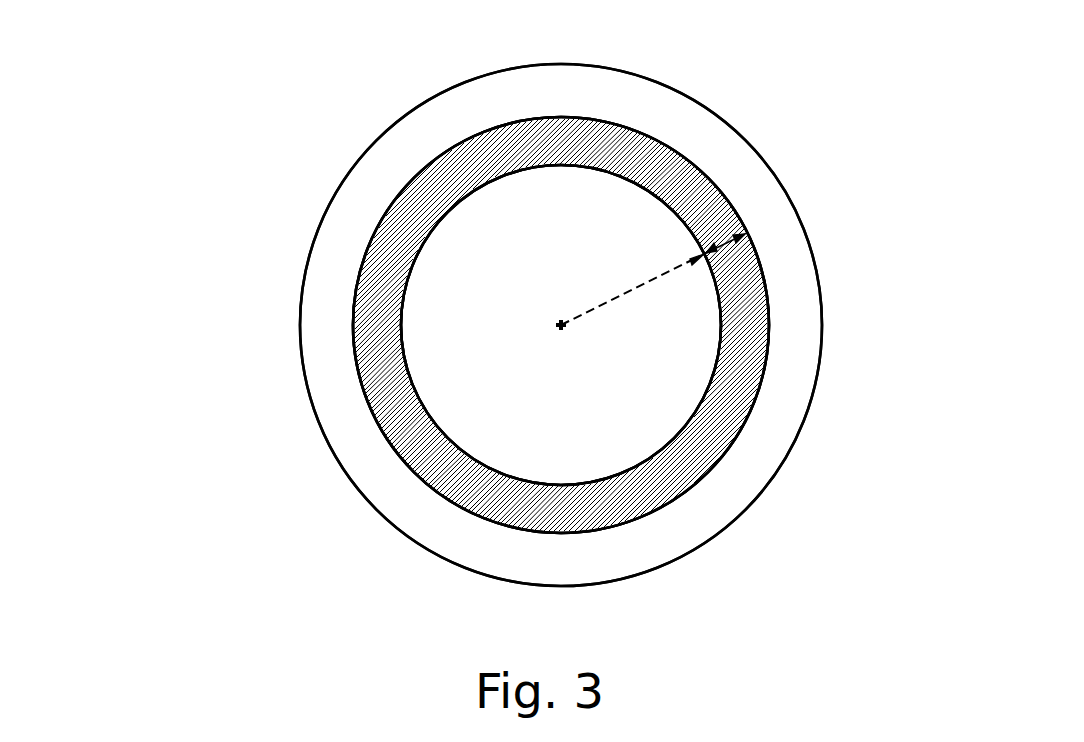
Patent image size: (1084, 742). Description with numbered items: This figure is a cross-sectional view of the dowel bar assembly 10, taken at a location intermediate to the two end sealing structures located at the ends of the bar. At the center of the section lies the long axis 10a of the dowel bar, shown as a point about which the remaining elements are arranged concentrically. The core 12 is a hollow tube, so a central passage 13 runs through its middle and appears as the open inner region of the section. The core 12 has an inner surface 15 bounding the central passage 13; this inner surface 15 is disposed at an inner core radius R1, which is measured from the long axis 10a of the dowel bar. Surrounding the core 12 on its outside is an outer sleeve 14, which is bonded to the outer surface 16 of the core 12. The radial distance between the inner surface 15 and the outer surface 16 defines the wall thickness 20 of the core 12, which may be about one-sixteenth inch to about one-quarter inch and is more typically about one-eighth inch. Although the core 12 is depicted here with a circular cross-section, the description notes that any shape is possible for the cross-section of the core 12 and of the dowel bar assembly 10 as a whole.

The dowel bar assembly 10 is at (158, 115).
The long axis 10a is at (554, 325).
The core 12 is at (590, 118).
The central passage 13 is at (506, 406).
The outer sleeve 14 is at (740, 138).
The inner surface 15 is at (439, 240).
The outer surface 16 is at (386, 194).
The wall thickness 20 is at (757, 285).
The inner core radius R1 is at (638, 290).